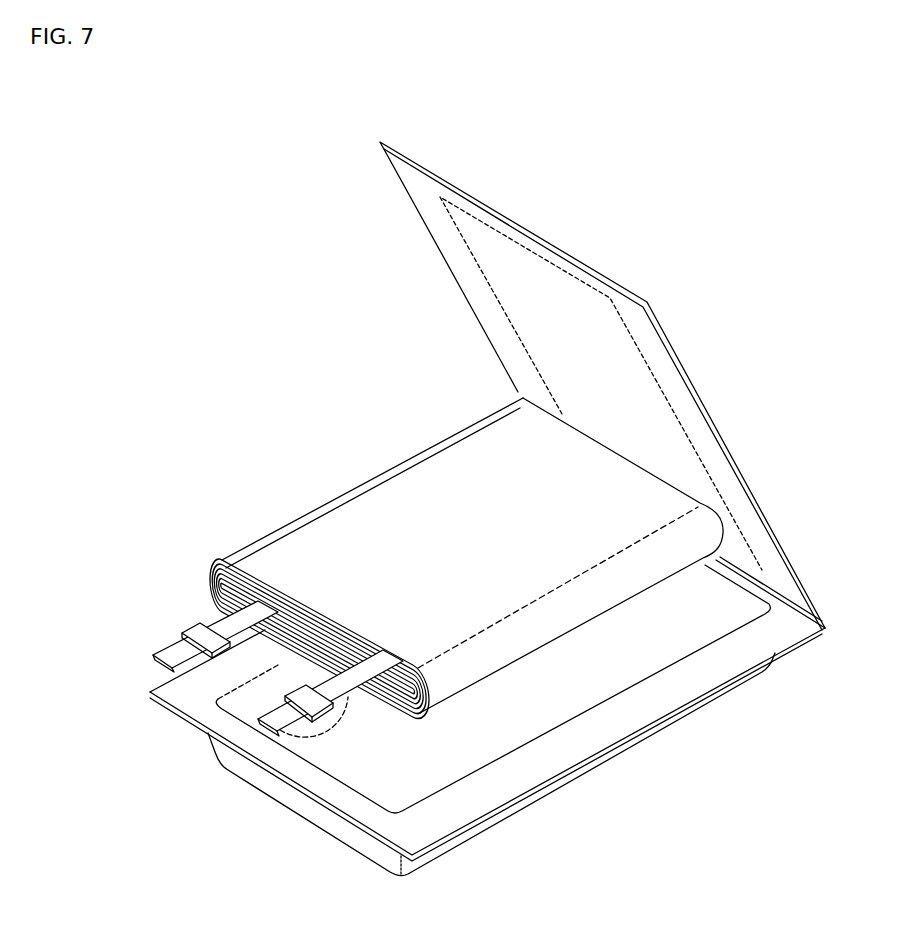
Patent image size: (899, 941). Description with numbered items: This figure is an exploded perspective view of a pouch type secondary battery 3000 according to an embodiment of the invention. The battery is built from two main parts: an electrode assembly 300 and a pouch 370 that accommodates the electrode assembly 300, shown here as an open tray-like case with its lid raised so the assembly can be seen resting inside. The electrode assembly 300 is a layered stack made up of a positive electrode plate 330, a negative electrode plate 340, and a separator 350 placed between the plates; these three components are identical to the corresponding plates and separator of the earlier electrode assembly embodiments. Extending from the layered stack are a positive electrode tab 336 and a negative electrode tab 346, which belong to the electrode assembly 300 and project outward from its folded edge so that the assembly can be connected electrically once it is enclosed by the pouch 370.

The pouch type secondary battery 3000 is at (144, 176).
The electrode assembly 300 is at (172, 490).
The positive electrode plate 330 is at (226, 558).
The separator 350 is at (216, 566).
The negative electrode plate 340 is at (214, 589).
The negative electrode tab 346 is at (215, 613).
The positive electrode tab 336 is at (315, 722).
The pouch 370 is at (750, 473).